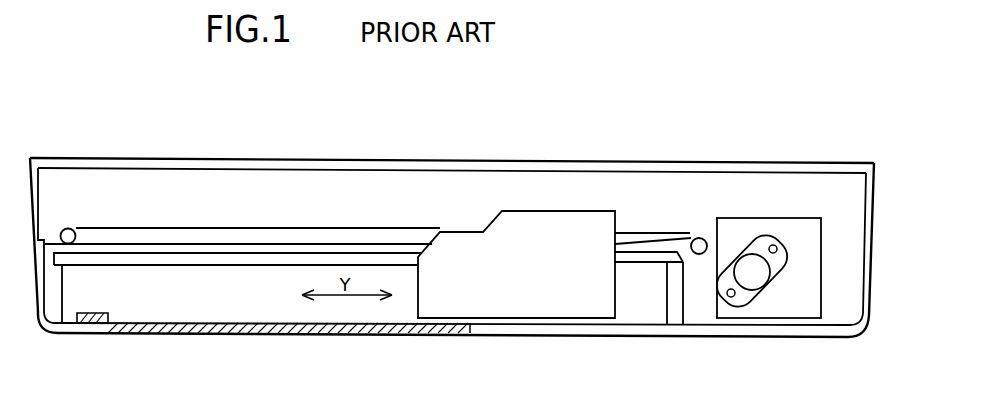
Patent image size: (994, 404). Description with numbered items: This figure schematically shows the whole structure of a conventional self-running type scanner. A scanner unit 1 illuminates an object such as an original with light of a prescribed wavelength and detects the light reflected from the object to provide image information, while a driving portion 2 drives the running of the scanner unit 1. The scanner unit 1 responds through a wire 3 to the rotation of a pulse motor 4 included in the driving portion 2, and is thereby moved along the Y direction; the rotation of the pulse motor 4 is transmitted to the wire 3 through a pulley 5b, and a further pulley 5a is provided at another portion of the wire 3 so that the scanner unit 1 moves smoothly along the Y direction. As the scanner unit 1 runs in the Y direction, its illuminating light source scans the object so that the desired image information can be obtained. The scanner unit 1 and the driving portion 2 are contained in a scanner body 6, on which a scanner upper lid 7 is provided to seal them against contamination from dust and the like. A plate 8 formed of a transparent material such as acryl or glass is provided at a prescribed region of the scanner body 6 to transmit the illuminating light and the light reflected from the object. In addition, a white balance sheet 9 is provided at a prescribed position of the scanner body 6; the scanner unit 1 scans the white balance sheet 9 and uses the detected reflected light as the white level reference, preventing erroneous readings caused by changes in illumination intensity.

The scanner unit 1 is at (478, 232).
The driving portion 2 is at (786, 228).
The wire 3 is at (268, 228).
The pulse motor 4 is at (777, 278).
The pulley 5a is at (68, 228).
The pulley 5b is at (697, 238).
The scanner body 6 is at (847, 340).
The scanner upper lid 7 is at (175, 158).
The plate 8 is at (410, 333).
The white balance sheet 9 is at (93, 312).